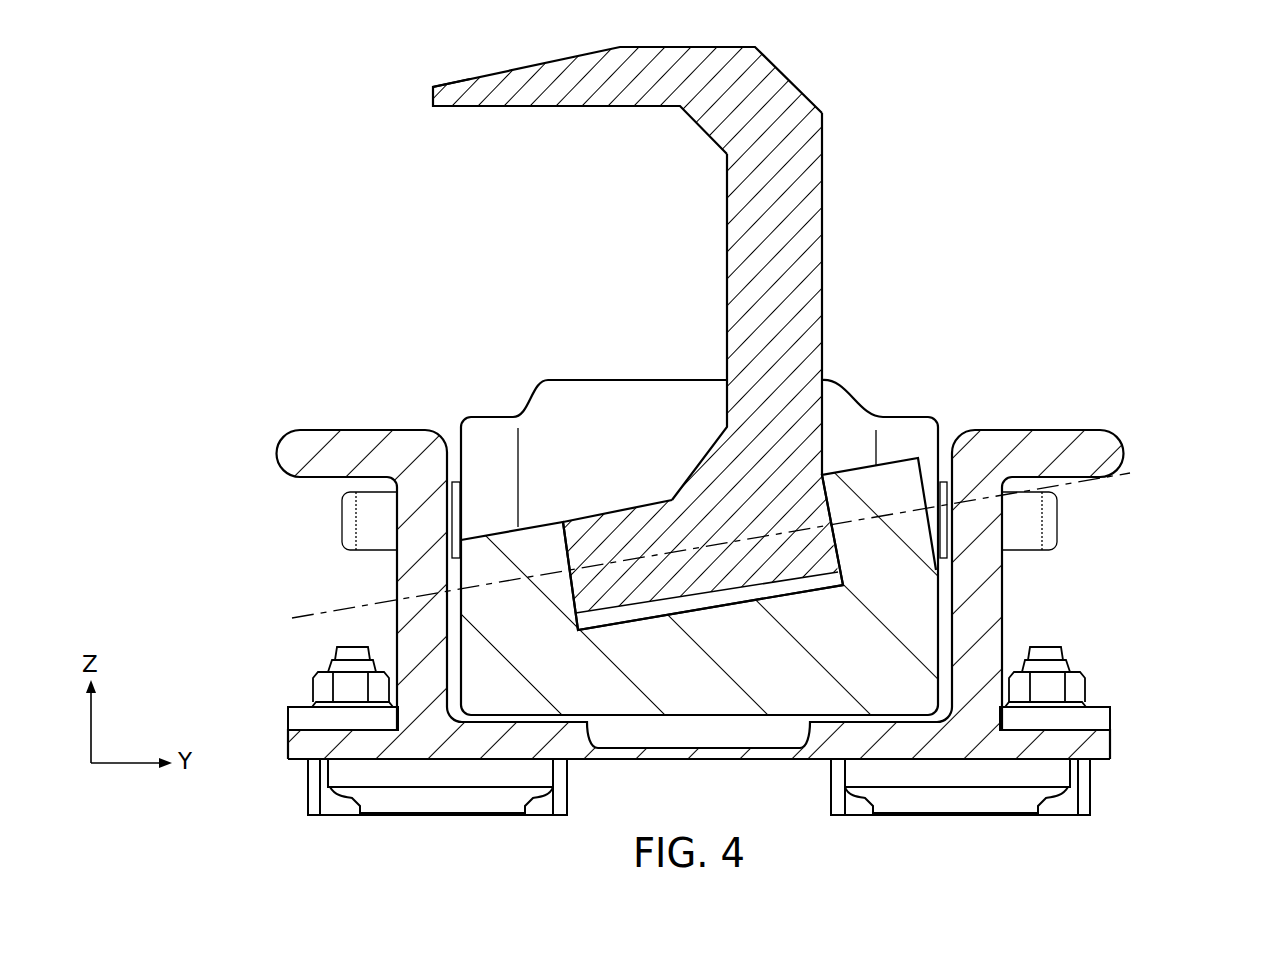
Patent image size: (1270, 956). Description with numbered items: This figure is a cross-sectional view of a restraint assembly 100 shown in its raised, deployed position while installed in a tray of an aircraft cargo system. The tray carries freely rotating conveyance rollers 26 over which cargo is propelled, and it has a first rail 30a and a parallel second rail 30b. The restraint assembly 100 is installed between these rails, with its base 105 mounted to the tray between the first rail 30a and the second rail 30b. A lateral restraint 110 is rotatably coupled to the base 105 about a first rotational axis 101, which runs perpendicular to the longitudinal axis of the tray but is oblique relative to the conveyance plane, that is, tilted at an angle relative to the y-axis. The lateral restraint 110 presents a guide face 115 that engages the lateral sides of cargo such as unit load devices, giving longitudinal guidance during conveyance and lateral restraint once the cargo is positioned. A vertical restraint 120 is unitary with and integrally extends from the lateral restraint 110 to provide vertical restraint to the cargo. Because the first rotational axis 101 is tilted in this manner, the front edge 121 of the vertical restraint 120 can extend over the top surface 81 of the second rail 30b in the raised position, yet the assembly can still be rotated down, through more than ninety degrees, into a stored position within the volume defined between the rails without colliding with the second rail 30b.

The restraint assembly 100 is at (926, 114).
The base 105 is at (906, 610).
The conveyance rollers 26 is at (570, 414).
The lateral restraint 110 is at (627, 315).
The guide face 115 is at (727, 272).
The vertical restraint 120 is at (588, 77).
The front edge 121 is at (433, 89).
The first rotational axis 101 is at (333, 610).
The top surface 81 is at (740, 580).
The first rail 30a is at (1098, 440).
The second rail 30b is at (300, 453).